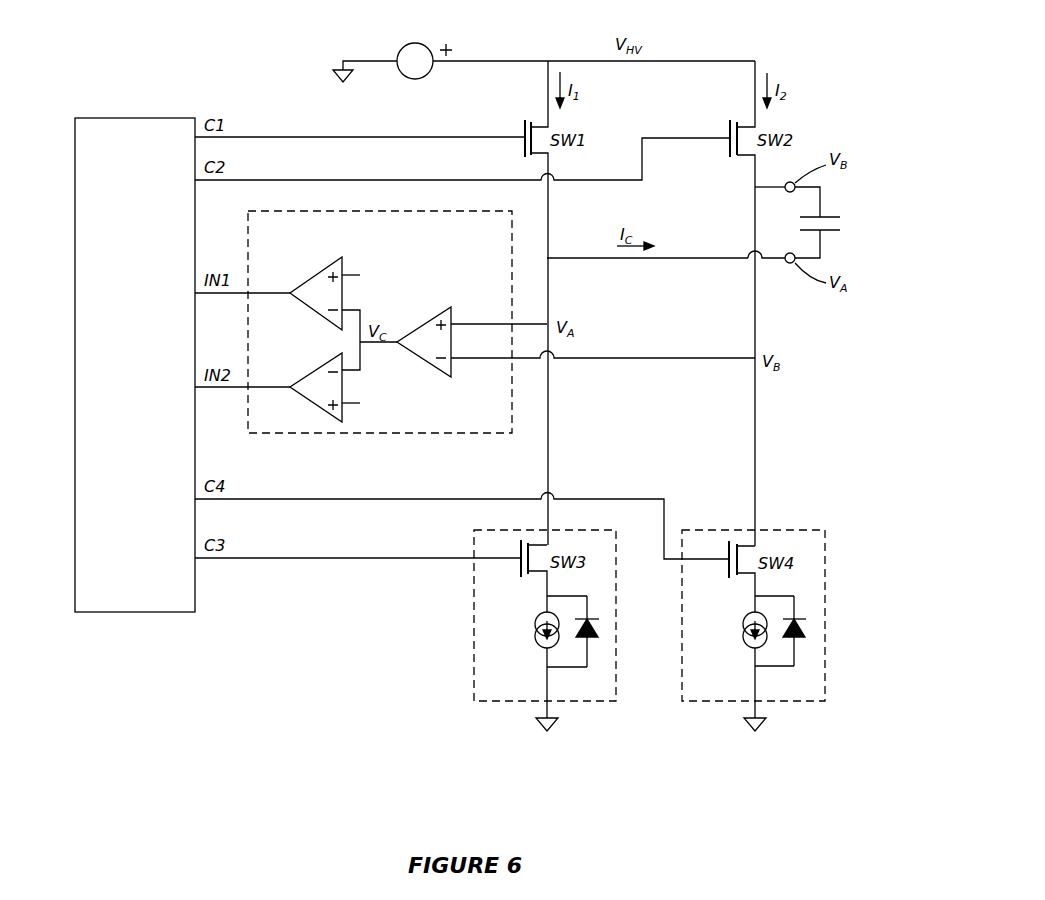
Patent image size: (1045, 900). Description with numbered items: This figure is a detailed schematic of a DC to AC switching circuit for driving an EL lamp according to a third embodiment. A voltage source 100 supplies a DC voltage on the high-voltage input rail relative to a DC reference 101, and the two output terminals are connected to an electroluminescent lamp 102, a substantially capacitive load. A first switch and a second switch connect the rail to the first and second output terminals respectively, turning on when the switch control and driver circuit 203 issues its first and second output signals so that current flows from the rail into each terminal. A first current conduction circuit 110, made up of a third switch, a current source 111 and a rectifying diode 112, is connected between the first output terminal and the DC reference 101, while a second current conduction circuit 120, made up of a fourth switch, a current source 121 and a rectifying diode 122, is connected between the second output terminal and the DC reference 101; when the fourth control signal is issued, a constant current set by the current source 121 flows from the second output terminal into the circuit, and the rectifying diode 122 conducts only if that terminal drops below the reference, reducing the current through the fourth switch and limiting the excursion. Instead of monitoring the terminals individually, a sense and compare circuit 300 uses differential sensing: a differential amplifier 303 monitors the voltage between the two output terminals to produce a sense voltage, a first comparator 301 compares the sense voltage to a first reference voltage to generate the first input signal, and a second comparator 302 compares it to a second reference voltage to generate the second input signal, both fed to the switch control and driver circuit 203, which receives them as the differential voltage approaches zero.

The voltage source 100 is at (410, 38).
The switch control and driver circuit 203 is at (75, 172).
The electroluminescent lamp 102 is at (838, 212).
The sense and compare circuit 300 is at (376, 441).
The first comparator 301 is at (307, 273).
The second comparator 302 is at (307, 371).
The differential amplifier 303 is at (452, 306).
The first current conduction circuit 110 is at (474, 637).
The current source 111 is at (534, 633).
The rectifying diode 112 is at (595, 641).
The second current conduction circuit 120 is at (827, 637).
The current source 121 is at (742, 632).
The rectifying diode 122 is at (800, 643).
The DC reference 101 is at (536, 725).